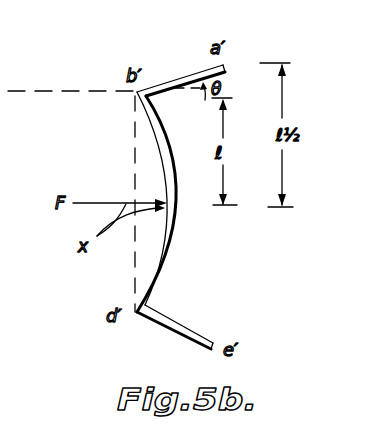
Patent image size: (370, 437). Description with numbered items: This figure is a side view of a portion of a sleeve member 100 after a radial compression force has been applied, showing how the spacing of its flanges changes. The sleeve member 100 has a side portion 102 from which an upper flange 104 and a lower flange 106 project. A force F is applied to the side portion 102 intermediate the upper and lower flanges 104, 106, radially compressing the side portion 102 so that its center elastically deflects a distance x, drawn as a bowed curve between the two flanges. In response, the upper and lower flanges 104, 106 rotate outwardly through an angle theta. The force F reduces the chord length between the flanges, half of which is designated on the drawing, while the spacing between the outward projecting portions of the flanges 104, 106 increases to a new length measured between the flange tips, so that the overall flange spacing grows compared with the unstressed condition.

The sleeve member 100 is at (134, 193).
The side portion 102 is at (158, 146).
The upper flange 104 is at (180, 79).
The lower flange 106 is at (158, 323).